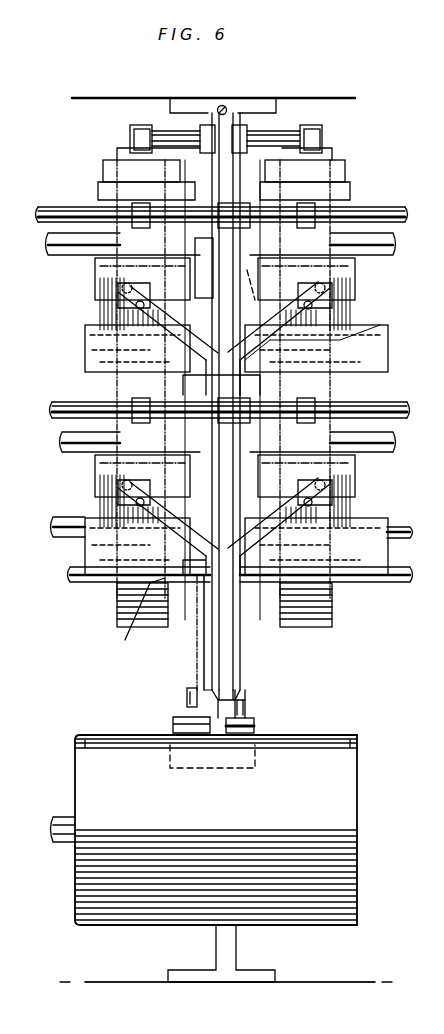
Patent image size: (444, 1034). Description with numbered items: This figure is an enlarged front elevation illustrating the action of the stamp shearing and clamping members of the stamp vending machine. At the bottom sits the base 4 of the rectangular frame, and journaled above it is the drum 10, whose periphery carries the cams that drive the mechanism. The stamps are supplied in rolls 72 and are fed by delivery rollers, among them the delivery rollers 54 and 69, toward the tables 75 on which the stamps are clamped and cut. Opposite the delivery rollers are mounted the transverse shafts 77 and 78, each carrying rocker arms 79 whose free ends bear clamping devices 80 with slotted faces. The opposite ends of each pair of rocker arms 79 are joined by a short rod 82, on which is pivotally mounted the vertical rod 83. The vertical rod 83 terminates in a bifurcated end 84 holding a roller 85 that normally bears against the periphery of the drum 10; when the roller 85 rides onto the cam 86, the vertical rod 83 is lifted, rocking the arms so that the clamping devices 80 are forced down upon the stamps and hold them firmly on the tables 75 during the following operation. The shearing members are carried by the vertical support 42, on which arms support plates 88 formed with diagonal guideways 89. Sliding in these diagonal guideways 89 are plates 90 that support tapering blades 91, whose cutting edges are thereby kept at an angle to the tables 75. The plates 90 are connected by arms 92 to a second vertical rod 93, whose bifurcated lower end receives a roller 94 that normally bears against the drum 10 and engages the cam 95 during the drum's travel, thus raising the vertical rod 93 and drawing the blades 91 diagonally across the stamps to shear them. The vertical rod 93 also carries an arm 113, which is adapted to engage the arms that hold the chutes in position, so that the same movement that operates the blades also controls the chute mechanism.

The base 4 is at (117, 982).
The drum 10 is at (344, 772).
The vertical support 42 is at (200, 126).
The delivery roller 54 is at (108, 174).
The delivery roller 69 is at (337, 170).
The rolls of stamps 72 is at (118, 152).
The table 75 is at (224, 406).
The transverse shaft 77 is at (64, 208).
The transverse shaft 78 is at (70, 402).
The rocker arm 79 is at (132, 205).
The clamping device 80 is at (110, 240).
The short rod 82 is at (185, 208).
The vertical rod 83 is at (236, 205).
The bifurcated end 84 is at (248, 696).
The roller 85 is at (75, 528).
The cam 86 is at (256, 724).
The plate 88 is at (100, 346).
The diagonal guideway 89 is at (380, 360).
The plate 90 is at (100, 316).
The tapering blade 91 is at (105, 272).
The arm 92 is at (126, 296).
The vertical rod 93 is at (208, 640).
The roller 94 is at (187, 700).
The cam 95 is at (173, 724).
The arm 113 is at (150, 585).